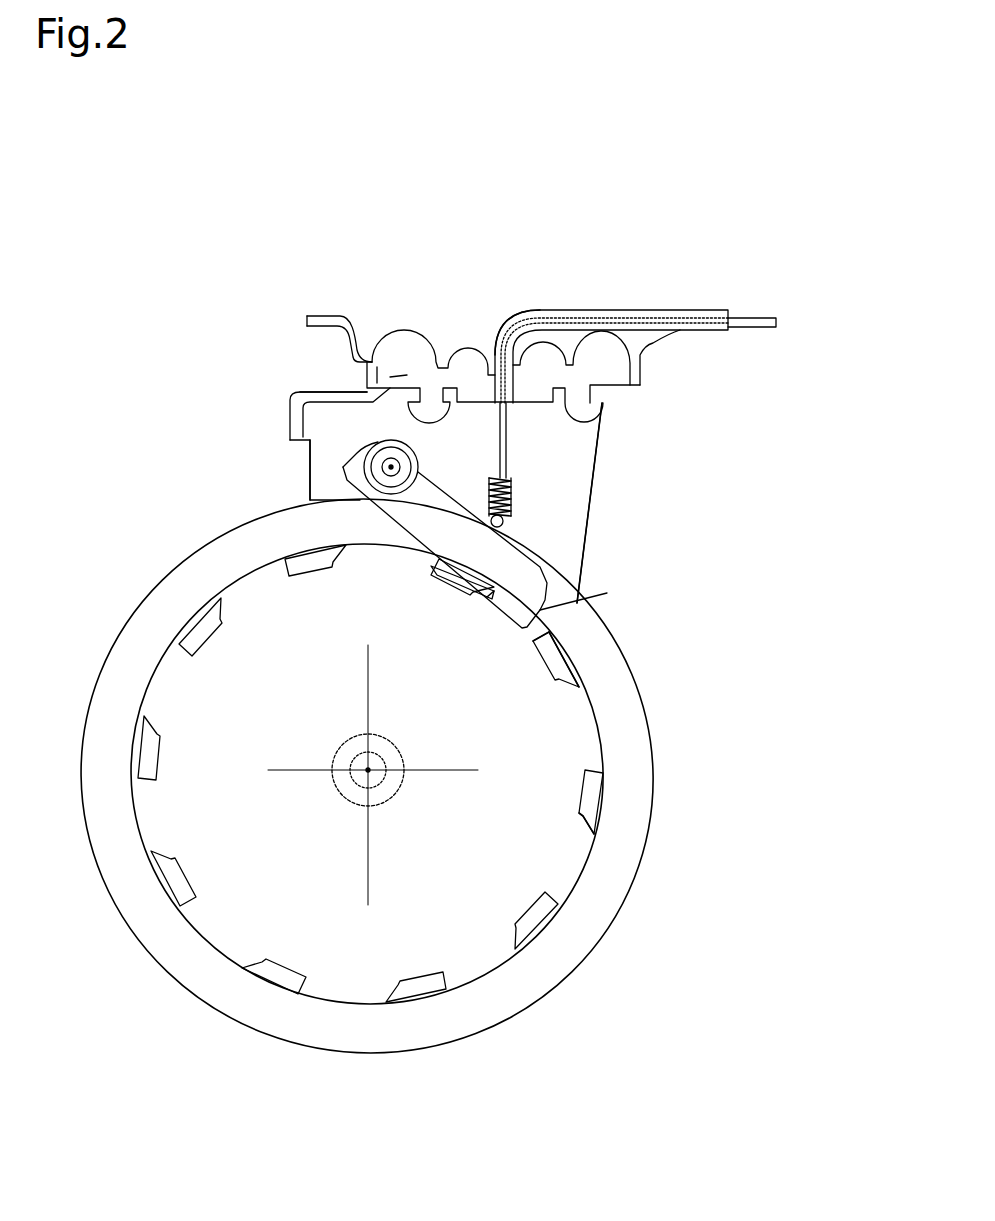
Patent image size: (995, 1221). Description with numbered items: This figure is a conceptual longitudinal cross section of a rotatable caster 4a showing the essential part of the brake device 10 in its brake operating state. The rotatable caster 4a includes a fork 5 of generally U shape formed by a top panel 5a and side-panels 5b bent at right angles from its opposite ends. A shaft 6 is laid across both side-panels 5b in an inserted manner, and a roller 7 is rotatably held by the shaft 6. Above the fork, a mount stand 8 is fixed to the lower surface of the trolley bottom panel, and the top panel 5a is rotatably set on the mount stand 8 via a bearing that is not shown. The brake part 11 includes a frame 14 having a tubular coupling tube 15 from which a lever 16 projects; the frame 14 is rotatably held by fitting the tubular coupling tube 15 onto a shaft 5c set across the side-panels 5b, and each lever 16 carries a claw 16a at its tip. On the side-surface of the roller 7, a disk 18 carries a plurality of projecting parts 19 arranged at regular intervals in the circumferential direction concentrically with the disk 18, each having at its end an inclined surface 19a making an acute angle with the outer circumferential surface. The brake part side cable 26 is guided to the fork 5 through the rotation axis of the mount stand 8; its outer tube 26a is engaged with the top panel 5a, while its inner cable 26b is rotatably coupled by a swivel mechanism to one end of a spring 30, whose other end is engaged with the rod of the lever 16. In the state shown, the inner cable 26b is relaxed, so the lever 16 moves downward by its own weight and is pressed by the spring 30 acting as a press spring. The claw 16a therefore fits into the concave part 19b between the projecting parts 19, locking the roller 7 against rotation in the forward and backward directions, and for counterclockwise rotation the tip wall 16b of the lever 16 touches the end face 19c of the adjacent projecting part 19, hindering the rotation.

The rotatable caster 4a is at (366, 705).
The fork 5 is at (407, 495).
The top panel 5a is at (316, 360).
The side-panels 5b is at (282, 473).
The shaft 5c is at (414, 457).
The shaft 6 is at (330, 791).
The roller 7 is at (367, 800).
The mount stand 8 is at (493, 333).
The brake device 10 is at (679, 498).
The brake part 11 is at (679, 498).
The frame 14 is at (497, 535).
The tubular coupling tube 15 is at (380, 531).
The lever 16 is at (449, 588).
The claw 16a is at (472, 637).
The tip wall 16b is at (606, 588).
The disk 18 is at (486, 858).
The projecting parts 19 is at (321, 773).
The inclined surface 19a is at (473, 840).
The concave part 19b is at (504, 805).
The end face 19c is at (493, 865).
The brake part side cable 26 is at (635, 300).
The outer tube 26a is at (525, 304).
The inner cable 26b is at (460, 386).
The spring 30 is at (526, 470).